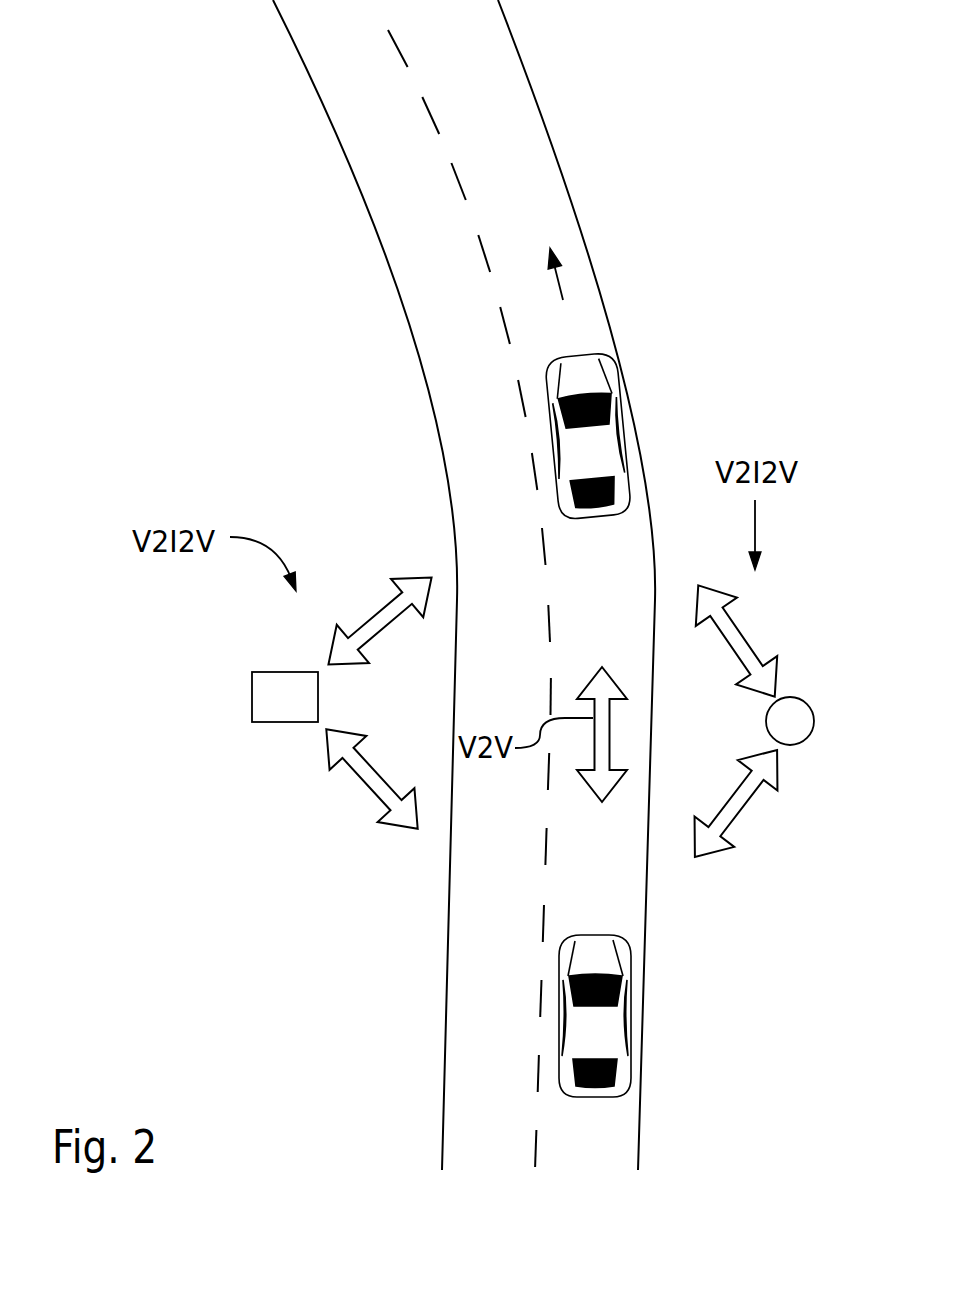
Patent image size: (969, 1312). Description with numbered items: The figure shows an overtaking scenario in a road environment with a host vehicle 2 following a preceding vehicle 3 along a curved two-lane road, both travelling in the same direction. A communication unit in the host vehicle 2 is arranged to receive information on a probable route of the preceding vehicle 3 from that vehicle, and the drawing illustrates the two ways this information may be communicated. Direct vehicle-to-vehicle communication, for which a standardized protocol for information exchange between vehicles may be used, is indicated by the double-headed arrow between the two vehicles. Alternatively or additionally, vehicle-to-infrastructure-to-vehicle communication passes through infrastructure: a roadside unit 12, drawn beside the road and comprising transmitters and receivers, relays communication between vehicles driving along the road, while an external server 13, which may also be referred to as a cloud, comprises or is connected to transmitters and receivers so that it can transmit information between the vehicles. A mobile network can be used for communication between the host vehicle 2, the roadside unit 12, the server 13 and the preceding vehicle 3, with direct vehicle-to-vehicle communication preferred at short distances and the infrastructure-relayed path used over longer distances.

The host vehicle 2 is at (675, 1004).
The preceding vehicle 3 is at (650, 357).
The roadside unit 12 is at (807, 734).
The external server 13 is at (298, 712).